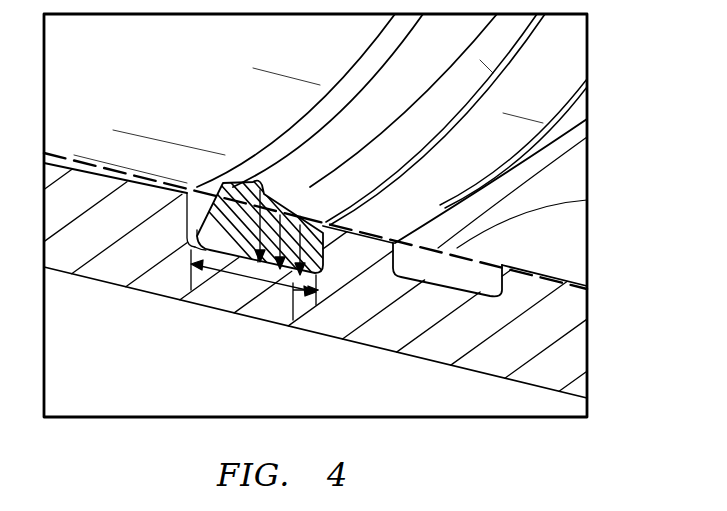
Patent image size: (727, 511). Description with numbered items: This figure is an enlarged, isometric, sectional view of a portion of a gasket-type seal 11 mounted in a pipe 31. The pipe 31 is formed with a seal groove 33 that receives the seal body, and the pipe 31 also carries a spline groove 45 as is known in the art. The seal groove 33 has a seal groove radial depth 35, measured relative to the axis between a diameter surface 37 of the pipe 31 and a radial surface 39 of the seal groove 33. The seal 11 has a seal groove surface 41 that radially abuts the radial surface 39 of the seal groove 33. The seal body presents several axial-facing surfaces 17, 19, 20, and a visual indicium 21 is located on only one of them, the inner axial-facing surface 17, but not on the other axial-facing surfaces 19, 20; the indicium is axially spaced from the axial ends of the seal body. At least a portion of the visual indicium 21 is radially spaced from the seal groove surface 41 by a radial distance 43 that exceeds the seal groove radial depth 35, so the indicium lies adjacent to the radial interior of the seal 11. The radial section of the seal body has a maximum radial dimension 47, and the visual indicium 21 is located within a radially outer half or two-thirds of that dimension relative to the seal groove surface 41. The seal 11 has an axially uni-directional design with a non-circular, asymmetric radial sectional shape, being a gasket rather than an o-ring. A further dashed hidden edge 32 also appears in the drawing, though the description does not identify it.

The seal 11 is at (240, 268).
The axial-facing surface 17 is at (362, 113).
The axial-facing surface 19 is at (367, 222).
The axial-facing surface 20 is at (196, 185).
The visual indicium 21 is at (460, 92).
The pipe 31 is at (378, 350).
The hidden edge 32 is at (558, 287).
The seal groove 33 is at (194, 185).
The seal groove radial depth 35 is at (293, 320).
The diameter surface 37 is at (571, 78).
The radial surface 39 is at (187, 240).
The seal groove surface 41 is at (202, 250).
The radial distance 43 is at (260, 258).
The spline groove 45 is at (571, 192).
The maximum radial dimension 47 is at (246, 185).